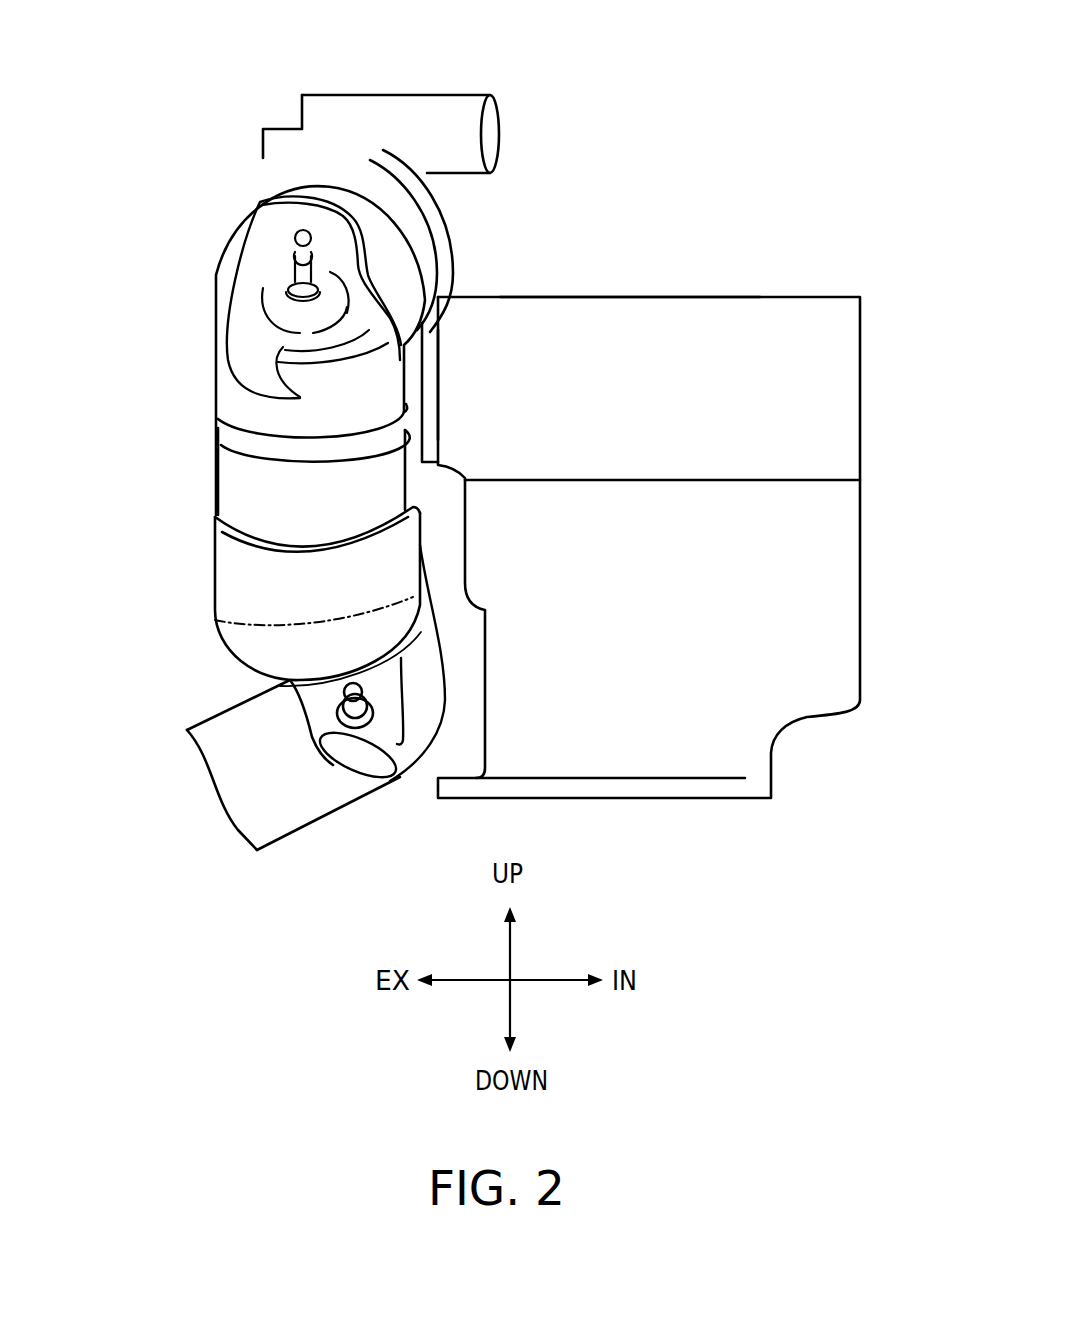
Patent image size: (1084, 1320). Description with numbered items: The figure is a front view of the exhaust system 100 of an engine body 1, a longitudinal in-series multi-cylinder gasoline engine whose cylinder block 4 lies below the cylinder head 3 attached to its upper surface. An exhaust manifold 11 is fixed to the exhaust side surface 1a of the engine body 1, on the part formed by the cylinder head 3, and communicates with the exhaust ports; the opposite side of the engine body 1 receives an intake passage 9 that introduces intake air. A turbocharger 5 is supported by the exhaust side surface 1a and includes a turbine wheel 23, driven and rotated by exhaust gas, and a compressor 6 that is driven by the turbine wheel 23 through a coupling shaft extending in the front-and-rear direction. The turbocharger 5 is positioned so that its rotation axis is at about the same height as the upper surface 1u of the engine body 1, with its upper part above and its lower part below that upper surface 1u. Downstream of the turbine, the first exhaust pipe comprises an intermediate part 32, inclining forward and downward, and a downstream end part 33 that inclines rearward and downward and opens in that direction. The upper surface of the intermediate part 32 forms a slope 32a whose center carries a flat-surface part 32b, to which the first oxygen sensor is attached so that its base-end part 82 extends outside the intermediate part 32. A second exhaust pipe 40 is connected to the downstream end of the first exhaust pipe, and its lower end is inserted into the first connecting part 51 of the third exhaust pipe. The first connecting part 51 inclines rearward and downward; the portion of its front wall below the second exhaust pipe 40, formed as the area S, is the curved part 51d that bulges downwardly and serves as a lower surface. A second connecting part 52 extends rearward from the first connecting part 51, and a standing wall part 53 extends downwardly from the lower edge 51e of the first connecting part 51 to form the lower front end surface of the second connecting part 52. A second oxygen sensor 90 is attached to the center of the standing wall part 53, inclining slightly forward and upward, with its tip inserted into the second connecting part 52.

The engine body 1 is at (866, 274).
The upper surface of the engine body 1u is at (680, 297).
The exhaust side surface 1a is at (435, 366).
The cylinder head 3 is at (842, 400).
The cylinder block 4 is at (842, 537).
The turbocharger 5 is at (207, 114).
The compressor 6 is at (436, 215).
The intake passage 9 is at (398, 118).
The exhaust manifold 11 is at (447, 330).
The turbine wheel 23 is at (223, 213).
The intermediate part 32 is at (207, 360).
The slope 32a is at (233, 253).
The flat-surface part 32b is at (240, 307).
The downstream end part 33 is at (220, 403).
The second exhaust pipe 40 is at (227, 480).
The first connecting part 51 is at (227, 563).
The curved part 51d is at (253, 648).
The lower edge of the first connecting part 51e is at (387, 664).
The second connecting part 52 is at (257, 703).
The standing wall part 53 is at (307, 737).
The base-end part 82 is at (300, 232).
The second oxygen sensor 90 is at (372, 708).
The exhaust system 100 is at (520, 160).
The area S is at (215, 620).